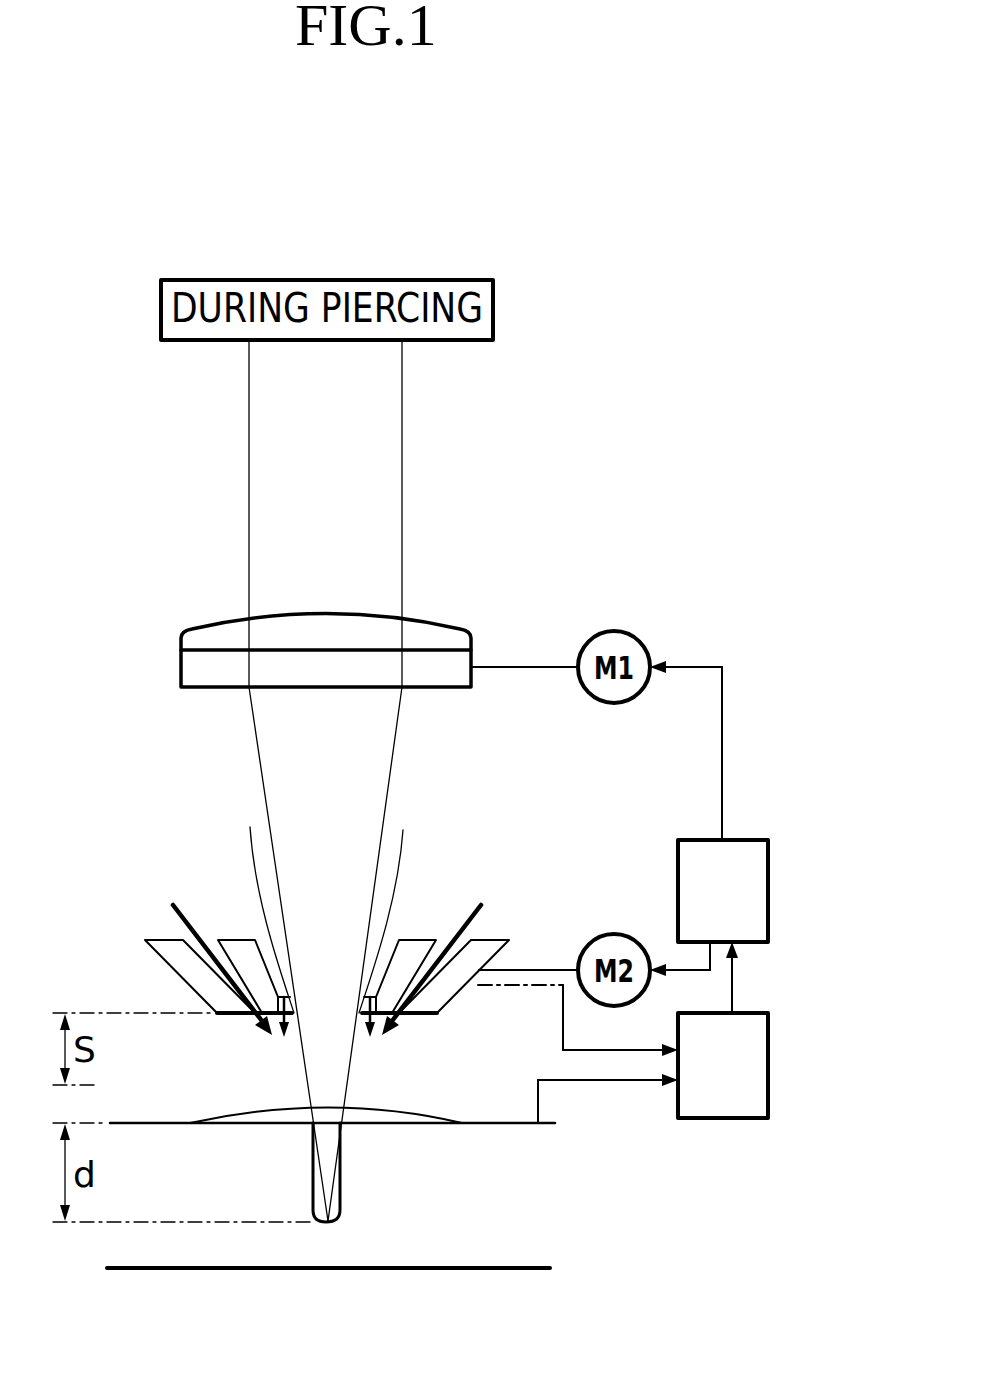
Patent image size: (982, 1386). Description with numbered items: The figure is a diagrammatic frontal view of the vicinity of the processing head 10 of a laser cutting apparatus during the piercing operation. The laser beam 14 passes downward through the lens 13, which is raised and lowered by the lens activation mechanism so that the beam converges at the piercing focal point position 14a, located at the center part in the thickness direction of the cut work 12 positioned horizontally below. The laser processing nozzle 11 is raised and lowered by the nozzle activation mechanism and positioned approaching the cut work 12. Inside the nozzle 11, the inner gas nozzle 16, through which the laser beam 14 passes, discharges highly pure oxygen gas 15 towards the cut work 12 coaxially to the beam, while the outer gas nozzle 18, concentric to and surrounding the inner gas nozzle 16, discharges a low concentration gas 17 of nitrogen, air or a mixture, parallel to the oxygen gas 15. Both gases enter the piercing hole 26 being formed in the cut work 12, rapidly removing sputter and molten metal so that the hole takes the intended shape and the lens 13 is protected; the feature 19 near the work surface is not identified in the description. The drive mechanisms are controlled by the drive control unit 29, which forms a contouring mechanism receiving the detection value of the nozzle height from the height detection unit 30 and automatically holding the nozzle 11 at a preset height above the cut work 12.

The processing head 10 is at (522, 498).
The laser processing nozzle 11 is at (515, 946).
The cut work 12 is at (255, 1270).
The lens 13 is at (205, 625).
The laser beam 14 is at (352, 1070).
The piercing focal point position 14a is at (334, 1223).
The oxygen gas 15 is at (398, 866).
The inner gas nozzle 16 is at (295, 1003).
The low concentration gas 17 is at (482, 910).
The outer gas nozzle 18 is at (437, 947).
The molten metal bump 19 is at (420, 1110).
The piercing hole 26 is at (341, 1203).
The drive control unit 29 is at (769, 903).
The height detection unit 30 is at (769, 1053).